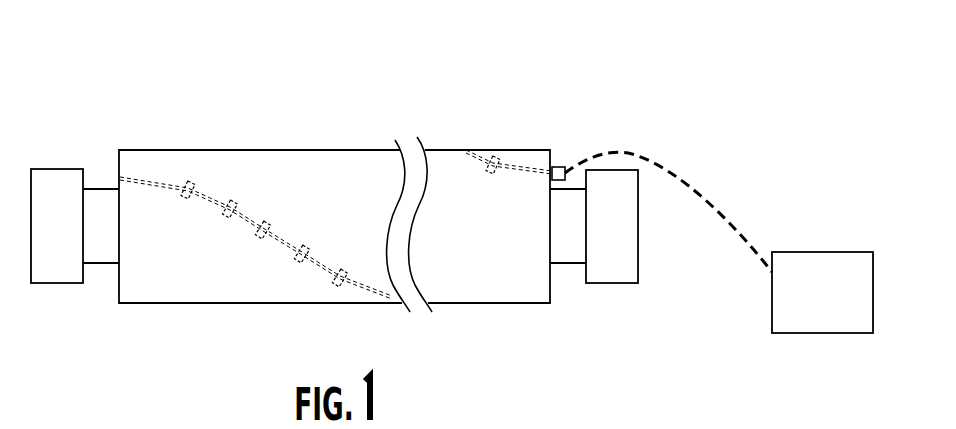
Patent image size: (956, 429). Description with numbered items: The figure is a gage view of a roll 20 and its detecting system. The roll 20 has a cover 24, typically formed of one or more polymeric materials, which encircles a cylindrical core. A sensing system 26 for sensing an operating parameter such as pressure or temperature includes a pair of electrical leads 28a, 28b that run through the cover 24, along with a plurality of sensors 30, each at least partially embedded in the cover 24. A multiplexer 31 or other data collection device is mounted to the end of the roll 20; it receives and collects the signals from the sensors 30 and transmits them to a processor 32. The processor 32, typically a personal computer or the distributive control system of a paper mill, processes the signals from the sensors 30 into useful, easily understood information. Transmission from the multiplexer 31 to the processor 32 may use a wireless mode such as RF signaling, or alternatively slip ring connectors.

The roll 20 is at (566, 111).
The cover 24 is at (534, 163).
The sensing system 26 is at (697, 170).
The electrical lead 28a is at (250, 219).
The electrical lead 28b is at (277, 245).
The sensors 30 is at (190, 184).
The multiplexer 31 is at (565, 172).
The processor 32 is at (832, 280).